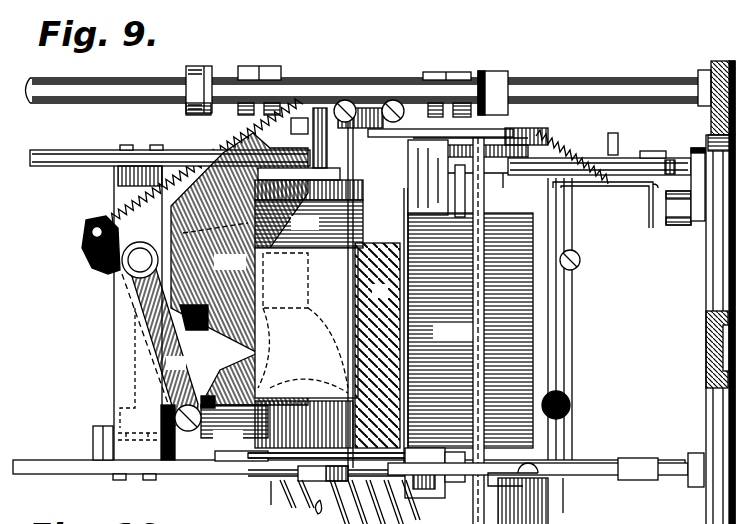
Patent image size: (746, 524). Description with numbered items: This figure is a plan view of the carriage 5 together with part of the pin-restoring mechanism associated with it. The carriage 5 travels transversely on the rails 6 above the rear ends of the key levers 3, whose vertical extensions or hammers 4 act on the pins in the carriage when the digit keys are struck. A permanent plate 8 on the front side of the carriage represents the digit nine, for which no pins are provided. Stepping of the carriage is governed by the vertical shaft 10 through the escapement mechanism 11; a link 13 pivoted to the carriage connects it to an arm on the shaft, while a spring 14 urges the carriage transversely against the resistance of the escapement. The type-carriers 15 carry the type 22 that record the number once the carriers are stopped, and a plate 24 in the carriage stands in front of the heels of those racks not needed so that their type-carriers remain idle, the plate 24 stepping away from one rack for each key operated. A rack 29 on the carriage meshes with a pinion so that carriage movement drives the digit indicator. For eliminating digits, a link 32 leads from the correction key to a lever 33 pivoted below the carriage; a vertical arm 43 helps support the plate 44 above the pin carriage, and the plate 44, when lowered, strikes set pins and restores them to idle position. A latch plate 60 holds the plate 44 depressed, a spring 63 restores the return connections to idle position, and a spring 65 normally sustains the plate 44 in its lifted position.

The key lever 3 is at (350, 502).
The vertical extension or hammer 4 is at (501, 331).
The carriage 5 is at (378, 293).
The rail 6 is at (44, 452).
The permanent plate 8 is at (296, 343).
The vertical shaft 10 is at (140, 260).
The escapement mechanism 11 is at (306, 323).
The link 13 is at (294, 431).
The spring 14 is at (239, 270).
The type-carrier 15 is at (160, 341).
The type 22 is at (369, 103).
The plate 24 is at (309, 208).
The rack 29 is at (629, 188).
The link 32 is at (649, 292).
The lever 33 is at (574, 319).
The vertical arm 43 is at (435, 486).
The plate 44 is at (470, 330).
The latch plate 60 is at (574, 405).
The spring 63 is at (214, 309).
The spring 65 is at (577, 154).